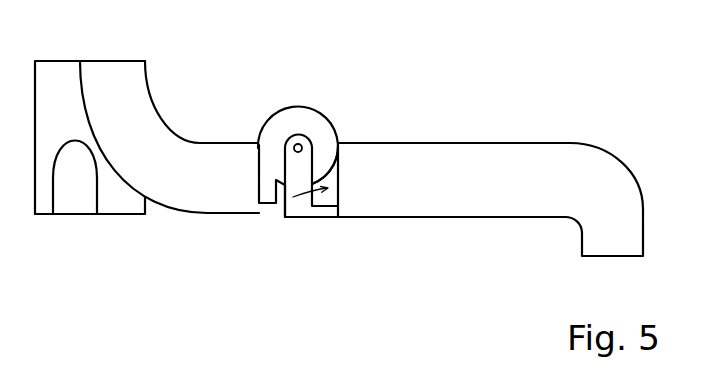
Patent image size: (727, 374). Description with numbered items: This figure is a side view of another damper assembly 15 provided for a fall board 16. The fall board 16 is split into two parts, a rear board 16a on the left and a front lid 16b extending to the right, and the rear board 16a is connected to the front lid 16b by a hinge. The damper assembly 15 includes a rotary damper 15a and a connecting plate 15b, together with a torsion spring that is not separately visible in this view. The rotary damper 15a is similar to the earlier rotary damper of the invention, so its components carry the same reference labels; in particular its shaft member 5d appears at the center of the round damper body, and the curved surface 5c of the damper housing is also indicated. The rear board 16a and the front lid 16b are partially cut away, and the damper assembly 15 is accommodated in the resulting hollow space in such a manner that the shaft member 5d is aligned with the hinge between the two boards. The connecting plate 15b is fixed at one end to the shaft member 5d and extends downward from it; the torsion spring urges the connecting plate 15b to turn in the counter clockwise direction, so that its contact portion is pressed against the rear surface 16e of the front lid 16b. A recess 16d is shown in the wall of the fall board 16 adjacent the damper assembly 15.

The damper assembly 15 is at (386, 50).
The rotary damper 15a is at (318, 108).
The connecting plate 15b is at (328, 216).
The fall board 16 is at (668, 185).
The rear board 16a is at (158, 104).
The front lid 16b is at (522, 141).
The notch of bracket 16d is at (275, 208).
The rear surface 16e is at (338, 209).
The curved surface 5c is at (335, 126).
The shaft member 5d is at (294, 144).